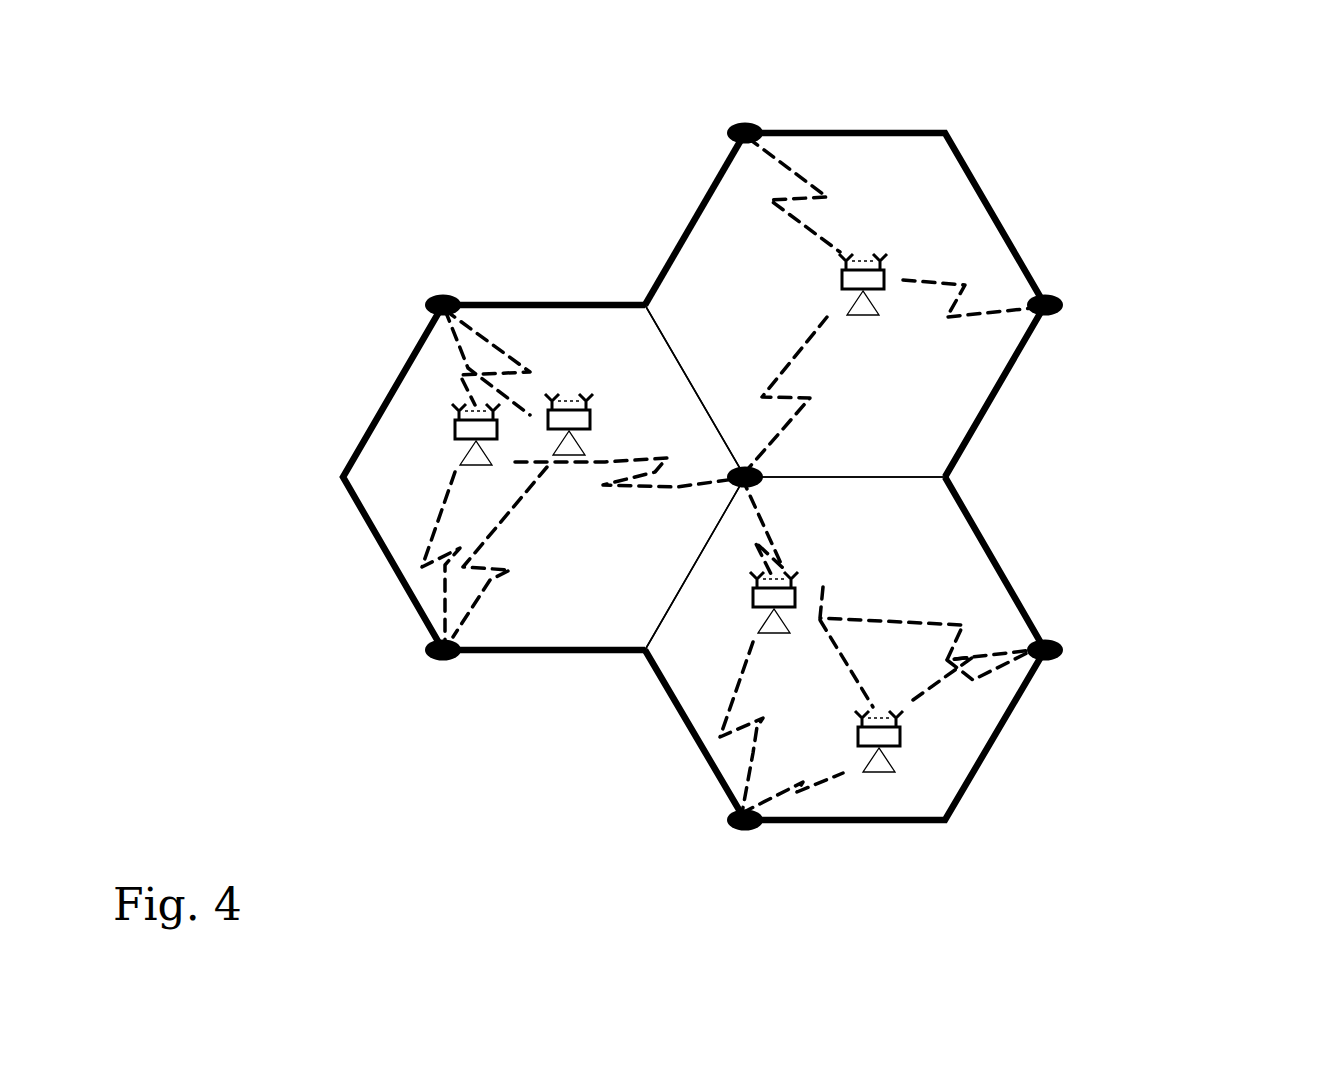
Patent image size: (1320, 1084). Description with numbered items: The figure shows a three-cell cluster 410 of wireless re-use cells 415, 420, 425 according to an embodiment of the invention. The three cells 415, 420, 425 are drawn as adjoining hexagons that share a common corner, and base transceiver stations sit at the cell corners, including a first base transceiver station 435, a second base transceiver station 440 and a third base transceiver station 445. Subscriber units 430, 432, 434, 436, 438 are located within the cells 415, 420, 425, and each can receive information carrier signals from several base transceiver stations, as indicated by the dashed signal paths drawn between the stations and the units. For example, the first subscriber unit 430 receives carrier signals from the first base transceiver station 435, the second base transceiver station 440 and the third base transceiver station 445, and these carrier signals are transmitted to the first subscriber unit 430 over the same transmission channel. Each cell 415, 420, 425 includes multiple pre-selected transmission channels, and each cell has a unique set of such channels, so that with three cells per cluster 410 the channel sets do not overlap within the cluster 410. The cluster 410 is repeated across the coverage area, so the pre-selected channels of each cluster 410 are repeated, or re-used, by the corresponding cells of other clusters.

The cluster 410 is at (1197, 378).
The wireless re-use cell 415 is at (920, 158).
The wireless re-use cell 420 is at (920, 508).
The wireless re-use cell 425 is at (442, 365).
The first subscriber unit 430 is at (900, 257).
The subscriber unit 432 is at (905, 728).
The subscriber unit 434 is at (808, 578).
The first base transceiver station 435 is at (757, 122).
The subscriber unit 436 is at (575, 400).
The subscriber unit 438 is at (438, 407).
The second base transceiver station 440 is at (1063, 297).
The third base transceiver station 445 is at (760, 472).